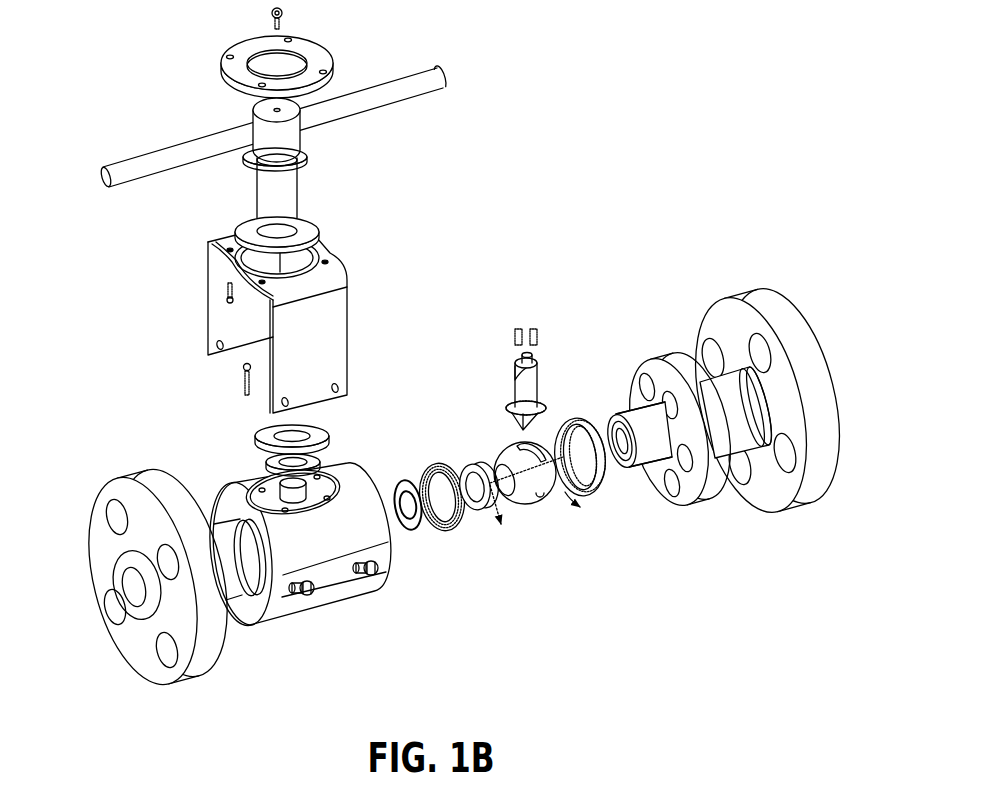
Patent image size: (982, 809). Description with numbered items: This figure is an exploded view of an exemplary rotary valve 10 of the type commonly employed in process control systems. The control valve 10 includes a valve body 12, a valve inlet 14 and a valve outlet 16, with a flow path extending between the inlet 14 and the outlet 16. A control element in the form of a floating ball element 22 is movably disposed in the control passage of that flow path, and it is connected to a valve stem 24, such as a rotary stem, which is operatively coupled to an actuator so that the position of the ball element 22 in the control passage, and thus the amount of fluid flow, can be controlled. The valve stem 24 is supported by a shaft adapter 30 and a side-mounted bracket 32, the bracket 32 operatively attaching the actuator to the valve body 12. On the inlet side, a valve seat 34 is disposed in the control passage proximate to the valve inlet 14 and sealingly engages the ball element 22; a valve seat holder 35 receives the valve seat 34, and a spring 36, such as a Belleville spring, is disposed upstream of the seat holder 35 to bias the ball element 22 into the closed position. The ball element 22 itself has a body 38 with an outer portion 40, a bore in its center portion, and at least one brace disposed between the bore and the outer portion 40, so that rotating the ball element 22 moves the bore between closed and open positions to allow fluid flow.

The rotary valve 10 is at (461, 352).
The valve body 12 is at (353, 592).
The valve inlet 14 is at (133, 585).
The valve outlet 16 is at (838, 375).
The ball element 22 is at (540, 503).
The valve stem 24 is at (549, 372).
The shaft adapter 30 is at (283, 200).
The side-mounted bracket 32 is at (208, 310).
The valve seat 34 is at (475, 462).
The valve seat holder 35 is at (440, 462).
The spring 36 is at (403, 483).
The body 38 is at (558, 493).
The outer portion 40 is at (545, 448).